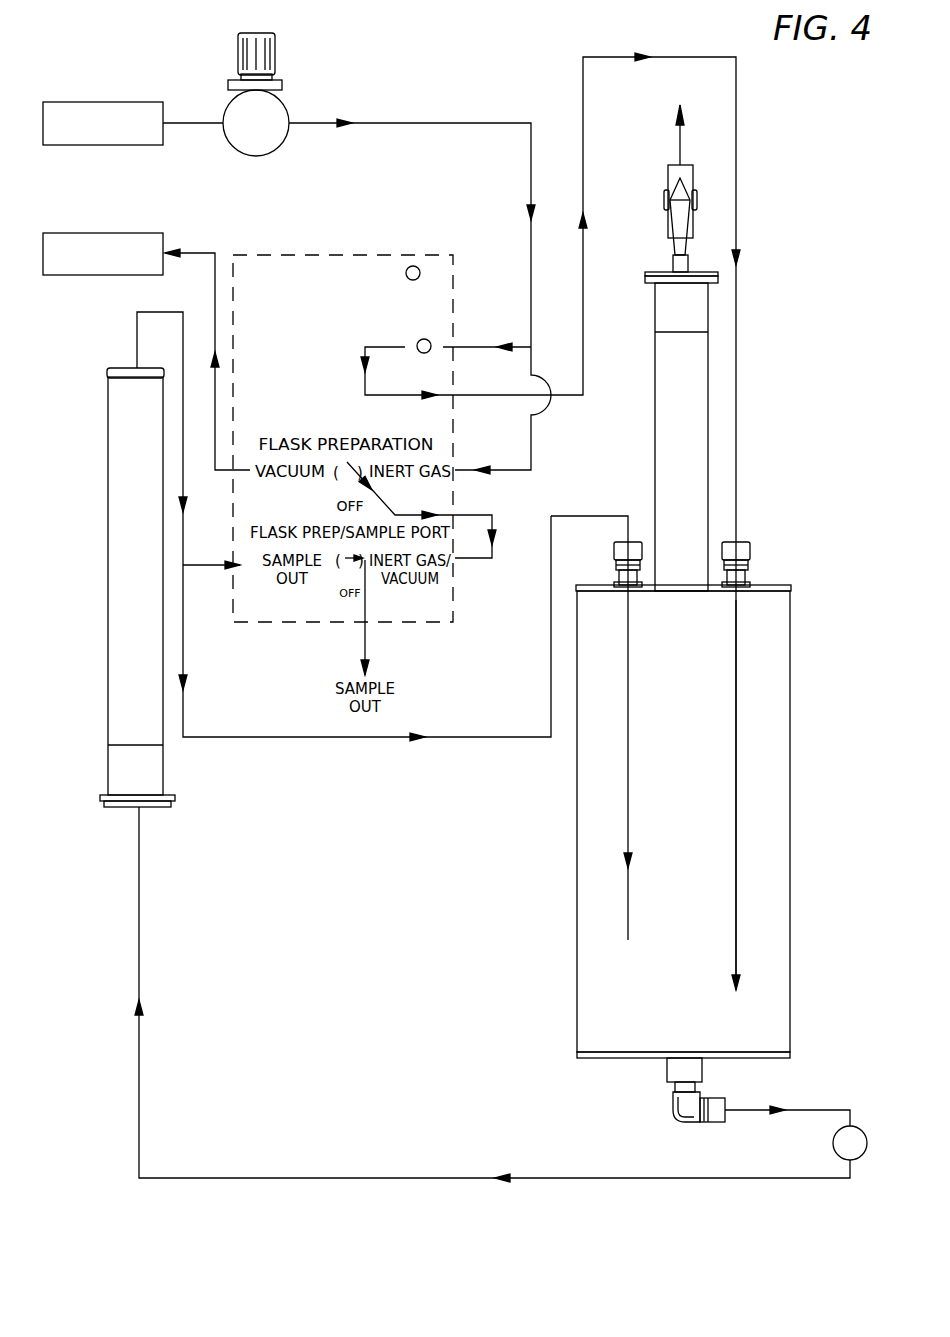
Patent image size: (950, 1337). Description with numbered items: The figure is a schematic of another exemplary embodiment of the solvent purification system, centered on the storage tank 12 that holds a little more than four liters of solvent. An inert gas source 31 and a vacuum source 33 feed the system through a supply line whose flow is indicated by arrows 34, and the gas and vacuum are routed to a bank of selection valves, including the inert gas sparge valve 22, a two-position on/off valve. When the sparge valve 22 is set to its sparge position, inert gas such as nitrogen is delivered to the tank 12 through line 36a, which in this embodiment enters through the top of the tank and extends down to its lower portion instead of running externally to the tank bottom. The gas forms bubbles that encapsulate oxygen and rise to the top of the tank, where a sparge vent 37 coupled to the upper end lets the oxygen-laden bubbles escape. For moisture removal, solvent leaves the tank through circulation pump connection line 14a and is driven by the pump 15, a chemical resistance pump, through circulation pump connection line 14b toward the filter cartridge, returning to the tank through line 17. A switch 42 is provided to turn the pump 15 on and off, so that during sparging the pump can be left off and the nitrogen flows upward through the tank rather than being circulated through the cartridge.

The inert gas source 31 is at (92, 102).
The vacuum source 33 is at (92, 233).
The arrows 34 is at (402, 123).
The switch 42 is at (408, 274).
The inert gas sparge valve 22 is at (429, 340).
The sparge vent 37 is at (682, 210).
The storage tank 12 is at (768, 675).
The line 17 is at (629, 795).
The line 36a is at (737, 820).
The circulation pump connection line 14a is at (817, 1110).
The pump 15 is at (855, 1140).
The circulation pump connection line 14b is at (410, 1178).